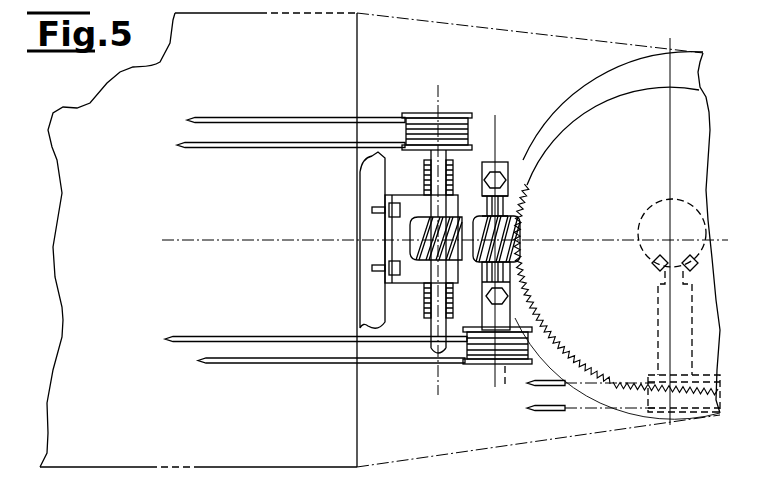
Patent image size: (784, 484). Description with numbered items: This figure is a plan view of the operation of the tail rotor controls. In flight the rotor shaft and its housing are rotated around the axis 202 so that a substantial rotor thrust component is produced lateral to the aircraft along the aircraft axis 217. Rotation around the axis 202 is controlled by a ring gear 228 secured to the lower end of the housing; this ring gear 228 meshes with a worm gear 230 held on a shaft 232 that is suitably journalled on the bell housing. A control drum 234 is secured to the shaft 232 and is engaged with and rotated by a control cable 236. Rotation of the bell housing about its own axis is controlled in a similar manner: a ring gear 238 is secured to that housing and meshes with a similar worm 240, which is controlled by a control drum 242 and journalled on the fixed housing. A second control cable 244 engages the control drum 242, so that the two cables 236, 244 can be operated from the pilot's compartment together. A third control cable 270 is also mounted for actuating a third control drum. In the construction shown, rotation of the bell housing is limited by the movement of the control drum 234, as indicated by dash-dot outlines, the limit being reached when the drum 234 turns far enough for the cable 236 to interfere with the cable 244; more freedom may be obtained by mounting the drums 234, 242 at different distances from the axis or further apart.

The axis 202 is at (199, 240).
The aircraft axis 217 is at (678, 420).
The ring gear 228 is at (531, 183).
The worm gear 230 is at (513, 250).
The shaft 232 is at (498, 388).
The control drum 234 is at (467, 364).
The control cable 236 is at (287, 363).
The ring gear 238 is at (427, 303).
The worm 240 is at (425, 218).
The control drum 242 is at (455, 113).
The second control cable 244 is at (295, 118).
The third control cable 270 is at (598, 405).